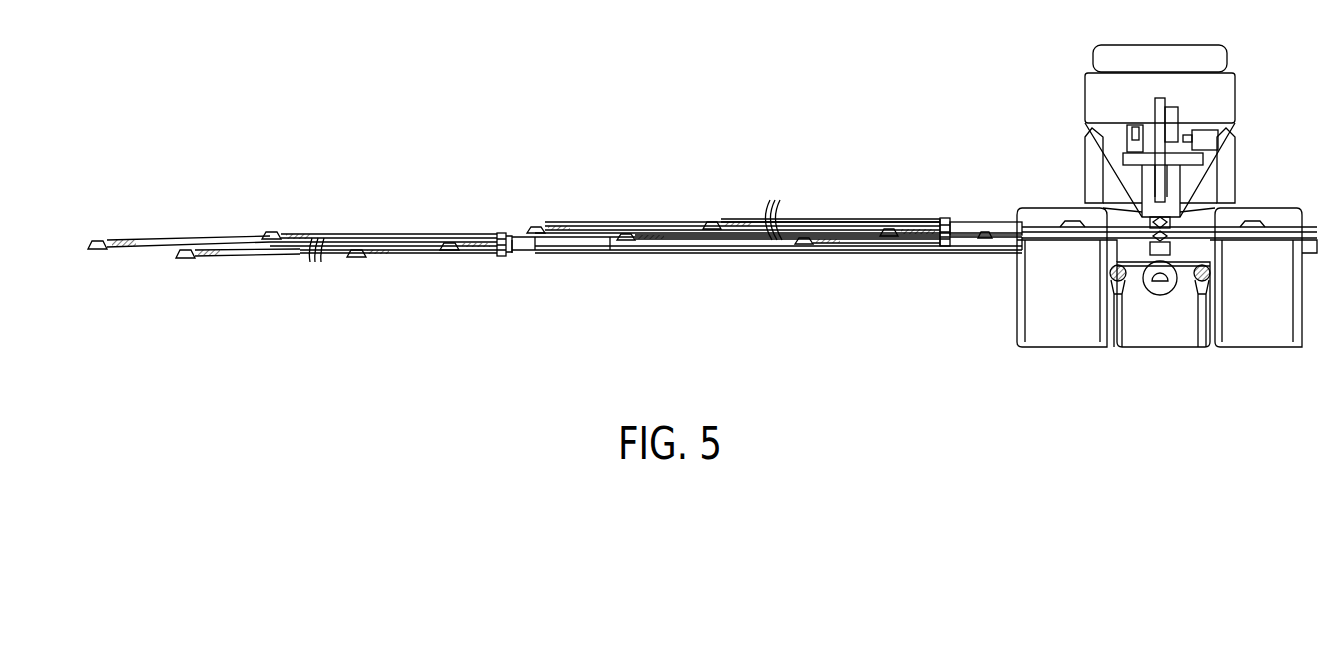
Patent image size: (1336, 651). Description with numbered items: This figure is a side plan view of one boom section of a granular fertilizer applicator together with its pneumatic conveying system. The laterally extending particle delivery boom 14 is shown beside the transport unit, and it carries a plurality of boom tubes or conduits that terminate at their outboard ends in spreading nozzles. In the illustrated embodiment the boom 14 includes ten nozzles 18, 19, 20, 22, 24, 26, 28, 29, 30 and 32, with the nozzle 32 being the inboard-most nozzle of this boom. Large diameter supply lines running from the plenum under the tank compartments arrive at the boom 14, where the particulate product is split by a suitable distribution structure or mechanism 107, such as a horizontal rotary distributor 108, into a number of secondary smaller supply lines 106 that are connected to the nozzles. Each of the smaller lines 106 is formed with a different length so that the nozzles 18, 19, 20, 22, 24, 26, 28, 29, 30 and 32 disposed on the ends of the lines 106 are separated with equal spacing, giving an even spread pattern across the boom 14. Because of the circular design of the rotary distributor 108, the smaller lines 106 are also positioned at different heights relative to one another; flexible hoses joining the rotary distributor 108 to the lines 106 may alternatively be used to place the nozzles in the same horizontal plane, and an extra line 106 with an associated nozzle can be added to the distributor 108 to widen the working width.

The particle delivery boom 14 is at (832, 220).
The nozzle 18 is at (97, 252).
The nozzle 19 is at (183, 259).
The nozzle 20 is at (270, 241).
The nozzle 22 is at (360, 258).
The nozzle 24 is at (450, 252).
The nozzle 26 is at (538, 227).
The nozzle 28 is at (627, 242).
The nozzle 29 is at (712, 230).
The nozzle 30 is at (803, 246).
The nozzle 32 is at (889, 238).
The smaller supply line 106 is at (320, 250).
The distribution structure 107 is at (507, 231).
The rotary distributor 108 is at (507, 258).